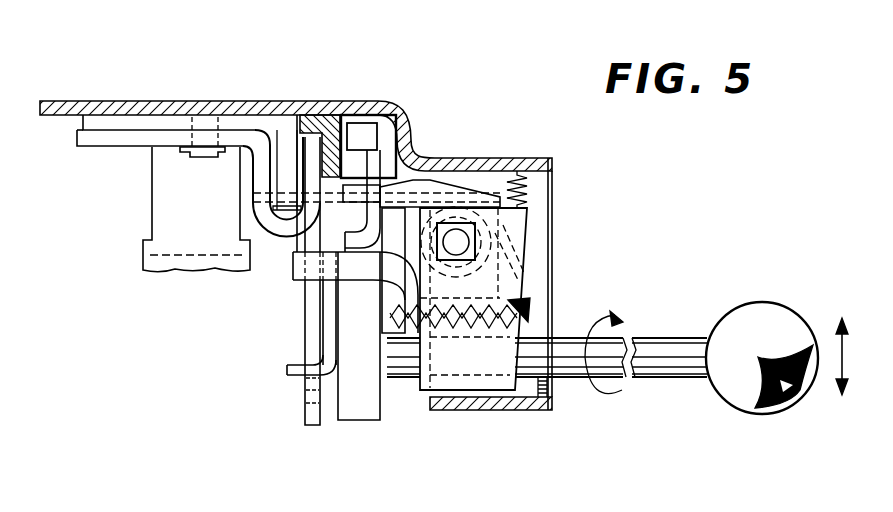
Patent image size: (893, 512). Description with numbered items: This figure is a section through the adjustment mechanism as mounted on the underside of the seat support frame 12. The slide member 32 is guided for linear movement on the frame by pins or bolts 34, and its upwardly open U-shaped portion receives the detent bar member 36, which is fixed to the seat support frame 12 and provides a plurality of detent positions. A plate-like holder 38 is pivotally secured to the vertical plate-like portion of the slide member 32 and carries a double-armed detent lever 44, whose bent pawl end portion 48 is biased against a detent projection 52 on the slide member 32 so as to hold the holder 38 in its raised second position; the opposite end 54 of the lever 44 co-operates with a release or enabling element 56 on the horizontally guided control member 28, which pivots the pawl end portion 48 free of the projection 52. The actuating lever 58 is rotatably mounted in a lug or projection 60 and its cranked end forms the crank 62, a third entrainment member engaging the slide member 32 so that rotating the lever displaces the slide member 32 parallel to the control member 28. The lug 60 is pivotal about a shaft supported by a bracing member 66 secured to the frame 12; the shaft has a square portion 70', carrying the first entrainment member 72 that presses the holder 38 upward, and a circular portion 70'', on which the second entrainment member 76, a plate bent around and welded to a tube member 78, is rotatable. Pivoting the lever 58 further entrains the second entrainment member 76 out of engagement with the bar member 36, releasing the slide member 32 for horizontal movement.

The seat support frame 12 is at (105, 102).
The pins or bolts 34 is at (143, 120).
The control member 28 is at (313, 117).
The end of the lever 54 is at (358, 132).
The release or enabling element 56 is at (355, 172).
The detent lever 44 is at (380, 153).
The first entrainment member 72 is at (417, 182).
The square or rectangular portion of the shaft 70' is at (489, 188).
The bracing member 66 is at (553, 178).
The round or circular portion of the shaft 70'' is at (517, 242).
The tube member 78 is at (455, 275).
The second entrainment member 76 is at (270, 193).
The actuating lever 58 is at (677, 348).
The detent bar member 36 is at (287, 157).
The slide member 32 is at (270, 222).
The crank 62 is at (362, 268).
The pawl end portion 48 is at (288, 370).
The detent projection 52 is at (305, 397).
The holder 38 is at (328, 407).
The lug or projection 60 is at (438, 382).